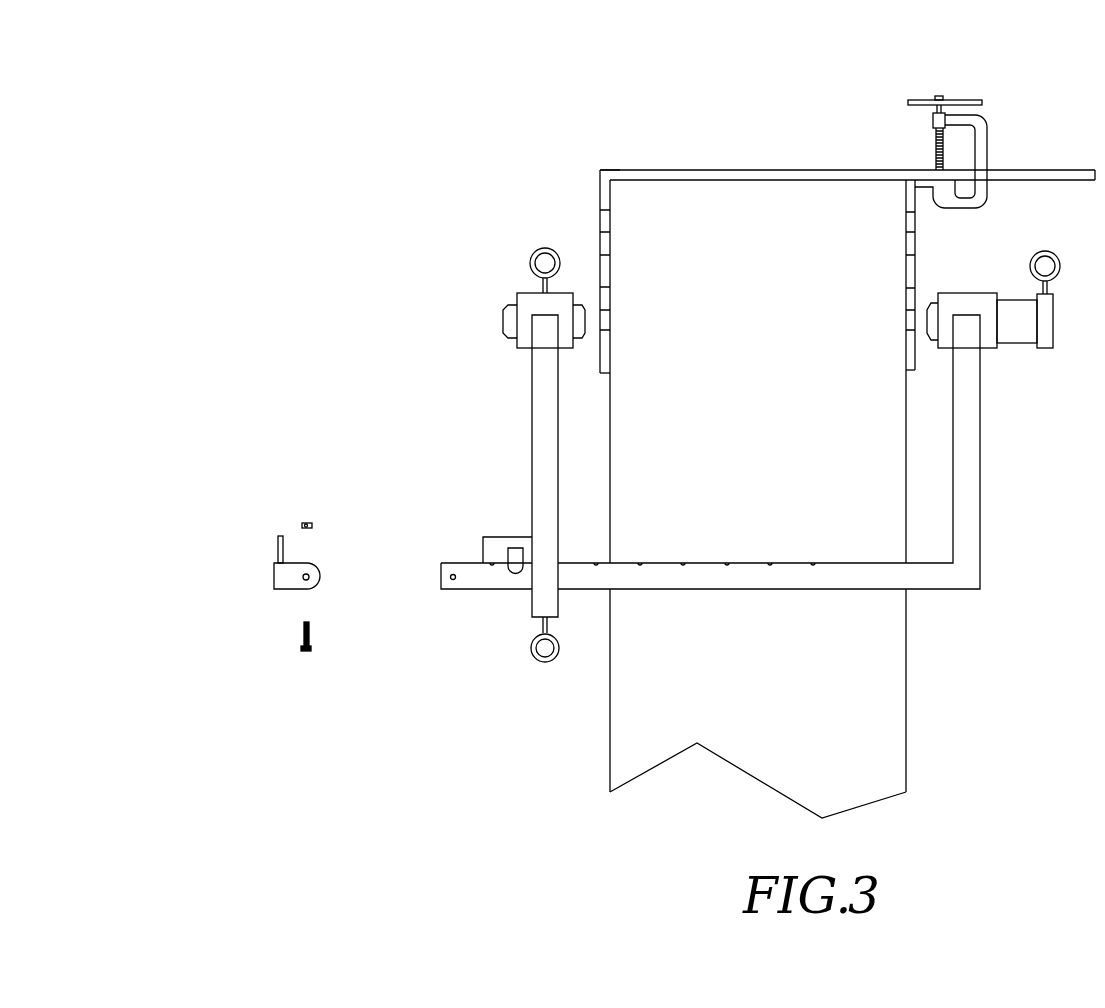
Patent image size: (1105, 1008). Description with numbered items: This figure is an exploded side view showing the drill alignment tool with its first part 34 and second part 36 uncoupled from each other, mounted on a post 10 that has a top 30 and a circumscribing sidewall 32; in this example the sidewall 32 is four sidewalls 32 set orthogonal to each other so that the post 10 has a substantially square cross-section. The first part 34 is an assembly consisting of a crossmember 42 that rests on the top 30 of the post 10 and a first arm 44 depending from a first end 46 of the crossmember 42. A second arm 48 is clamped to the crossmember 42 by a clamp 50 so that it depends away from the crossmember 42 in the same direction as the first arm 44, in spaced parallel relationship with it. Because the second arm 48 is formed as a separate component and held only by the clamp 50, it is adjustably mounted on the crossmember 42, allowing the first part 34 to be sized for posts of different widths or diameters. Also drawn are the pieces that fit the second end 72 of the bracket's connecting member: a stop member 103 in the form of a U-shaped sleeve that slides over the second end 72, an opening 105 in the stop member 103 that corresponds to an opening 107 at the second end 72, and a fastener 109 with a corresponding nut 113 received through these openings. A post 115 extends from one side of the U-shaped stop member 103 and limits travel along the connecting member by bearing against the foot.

The post 10 is at (910, 690).
The top 30 is at (661, 178).
The sidewall 32 is at (910, 632).
The first part 34 is at (764, 207).
The second part 36 is at (495, 529).
The crossmember 42 is at (780, 166).
The first arm 44 is at (598, 243).
The first end 46 is at (606, 170).
The second arm 48 is at (919, 245).
The clamp 50 is at (1006, 120).
The second end 72 is at (440, 573).
The stop member 103 is at (262, 576).
The opening 105 is at (300, 584).
The opening 107 is at (456, 584).
The fastener 109 is at (322, 636).
The nut 113 is at (312, 526).
The post 115 is at (276, 538).